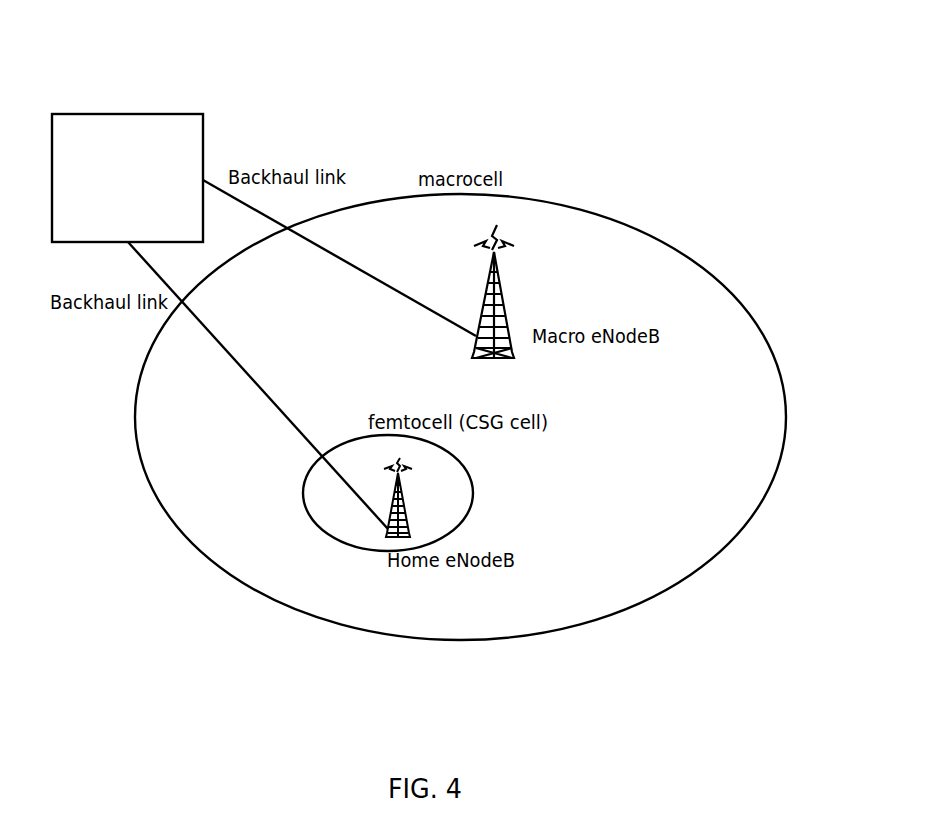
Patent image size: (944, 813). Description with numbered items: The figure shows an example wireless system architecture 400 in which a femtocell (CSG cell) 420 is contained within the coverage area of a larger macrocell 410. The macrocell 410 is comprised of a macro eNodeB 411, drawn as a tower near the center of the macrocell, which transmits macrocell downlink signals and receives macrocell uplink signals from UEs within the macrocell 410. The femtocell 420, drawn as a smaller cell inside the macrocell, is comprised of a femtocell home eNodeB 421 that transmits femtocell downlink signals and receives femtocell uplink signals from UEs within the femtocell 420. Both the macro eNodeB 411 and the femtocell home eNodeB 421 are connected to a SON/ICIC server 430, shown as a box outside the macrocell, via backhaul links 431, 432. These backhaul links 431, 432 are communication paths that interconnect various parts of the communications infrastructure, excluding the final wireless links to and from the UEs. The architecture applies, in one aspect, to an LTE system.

The wireless system architecture 400 is at (585, 66).
The macrocell 410 is at (513, 194).
The macro eNodeB 411 is at (507, 312).
The femtocell (CSG cell) 420 is at (473, 491).
The femtocell home eNodeB 421 is at (408, 503).
The SON/ICIC server 430 is at (176, 114).
The backhaul link 431 is at (354, 265).
The backhaul link 432 is at (254, 380).